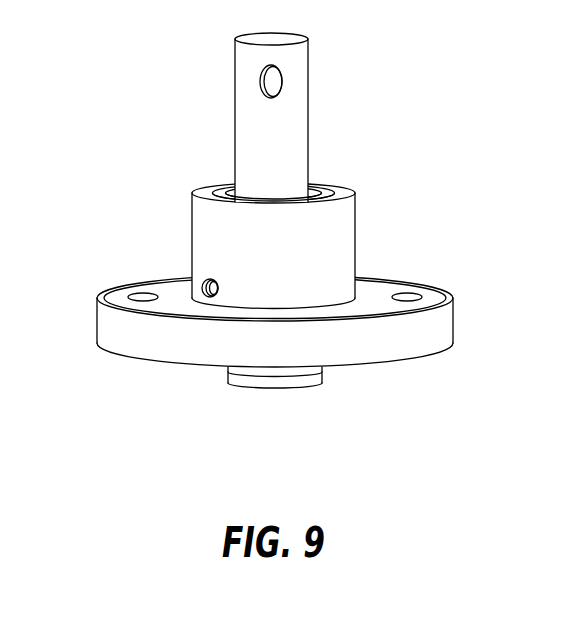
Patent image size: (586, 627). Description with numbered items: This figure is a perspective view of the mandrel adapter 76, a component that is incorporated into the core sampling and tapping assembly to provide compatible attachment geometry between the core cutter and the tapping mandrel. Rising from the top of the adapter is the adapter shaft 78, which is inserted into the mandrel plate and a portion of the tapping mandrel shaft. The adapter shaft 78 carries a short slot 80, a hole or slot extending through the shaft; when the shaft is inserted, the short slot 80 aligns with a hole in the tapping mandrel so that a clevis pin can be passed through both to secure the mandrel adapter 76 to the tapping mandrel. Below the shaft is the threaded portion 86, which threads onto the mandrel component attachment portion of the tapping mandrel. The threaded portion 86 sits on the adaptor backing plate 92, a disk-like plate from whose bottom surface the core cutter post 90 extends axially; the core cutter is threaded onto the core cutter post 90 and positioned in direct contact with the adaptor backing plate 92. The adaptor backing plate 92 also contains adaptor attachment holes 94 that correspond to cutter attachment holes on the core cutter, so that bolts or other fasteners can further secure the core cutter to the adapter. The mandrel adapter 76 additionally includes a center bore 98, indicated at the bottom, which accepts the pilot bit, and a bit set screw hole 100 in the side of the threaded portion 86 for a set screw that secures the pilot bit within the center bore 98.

The mandrel adapter 76 is at (132, 95).
The adapter shaft 78 is at (297, 117).
The short slot 80 is at (270, 81).
The threaded portion 86 is at (320, 195).
The core cutter post 90 is at (322, 379).
The adaptor backing plate 92 is at (443, 325).
The adaptor attachment holes 94 is at (140, 294).
The center bore 98 is at (263, 397).
The bit set screw hole 100 is at (202, 297).